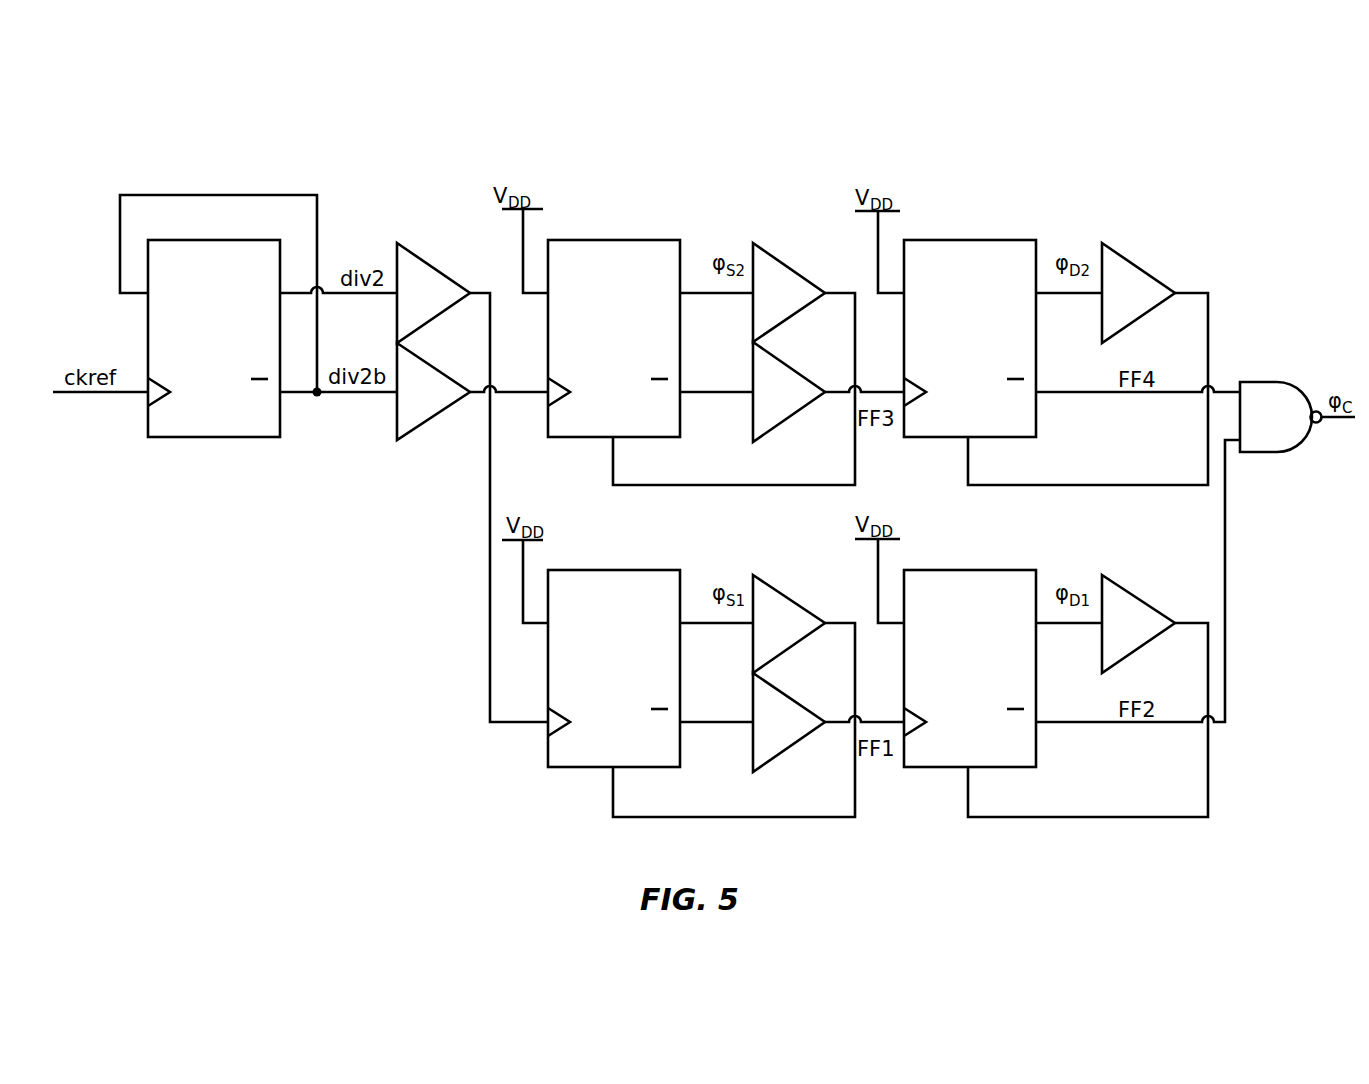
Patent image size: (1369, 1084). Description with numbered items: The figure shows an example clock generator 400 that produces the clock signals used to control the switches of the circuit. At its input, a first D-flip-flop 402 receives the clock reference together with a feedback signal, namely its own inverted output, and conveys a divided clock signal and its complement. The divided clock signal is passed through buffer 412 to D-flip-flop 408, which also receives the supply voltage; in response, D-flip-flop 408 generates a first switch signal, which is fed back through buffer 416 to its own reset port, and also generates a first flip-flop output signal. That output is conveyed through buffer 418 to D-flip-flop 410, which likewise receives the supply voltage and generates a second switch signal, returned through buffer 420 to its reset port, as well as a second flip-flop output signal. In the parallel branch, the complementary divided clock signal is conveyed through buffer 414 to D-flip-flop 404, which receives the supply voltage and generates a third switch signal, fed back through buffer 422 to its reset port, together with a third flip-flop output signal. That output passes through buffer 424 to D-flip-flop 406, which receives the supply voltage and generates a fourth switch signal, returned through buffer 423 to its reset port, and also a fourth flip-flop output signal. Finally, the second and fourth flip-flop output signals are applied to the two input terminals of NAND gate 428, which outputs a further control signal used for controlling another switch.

The clock generator 400 is at (1217, 153).
The D-flip-flop 402 is at (212, 438).
The D-flip-flop 404 is at (613, 240).
The D-flip-flop 406 is at (968, 240).
The D-flip-flop 408 is at (613, 570).
The D-flip-flop 410 is at (968, 570).
The buffer 412 is at (420, 254).
The buffer 414 is at (411, 430).
The buffer 416 is at (778, 588).
The buffer 418 is at (778, 760).
The buffer 420 is at (1128, 588).
The buffer 422 is at (778, 256).
The buffer 423 is at (1128, 256).
The buffer 424 is at (778, 430).
The NAND gate 428 is at (1263, 452).